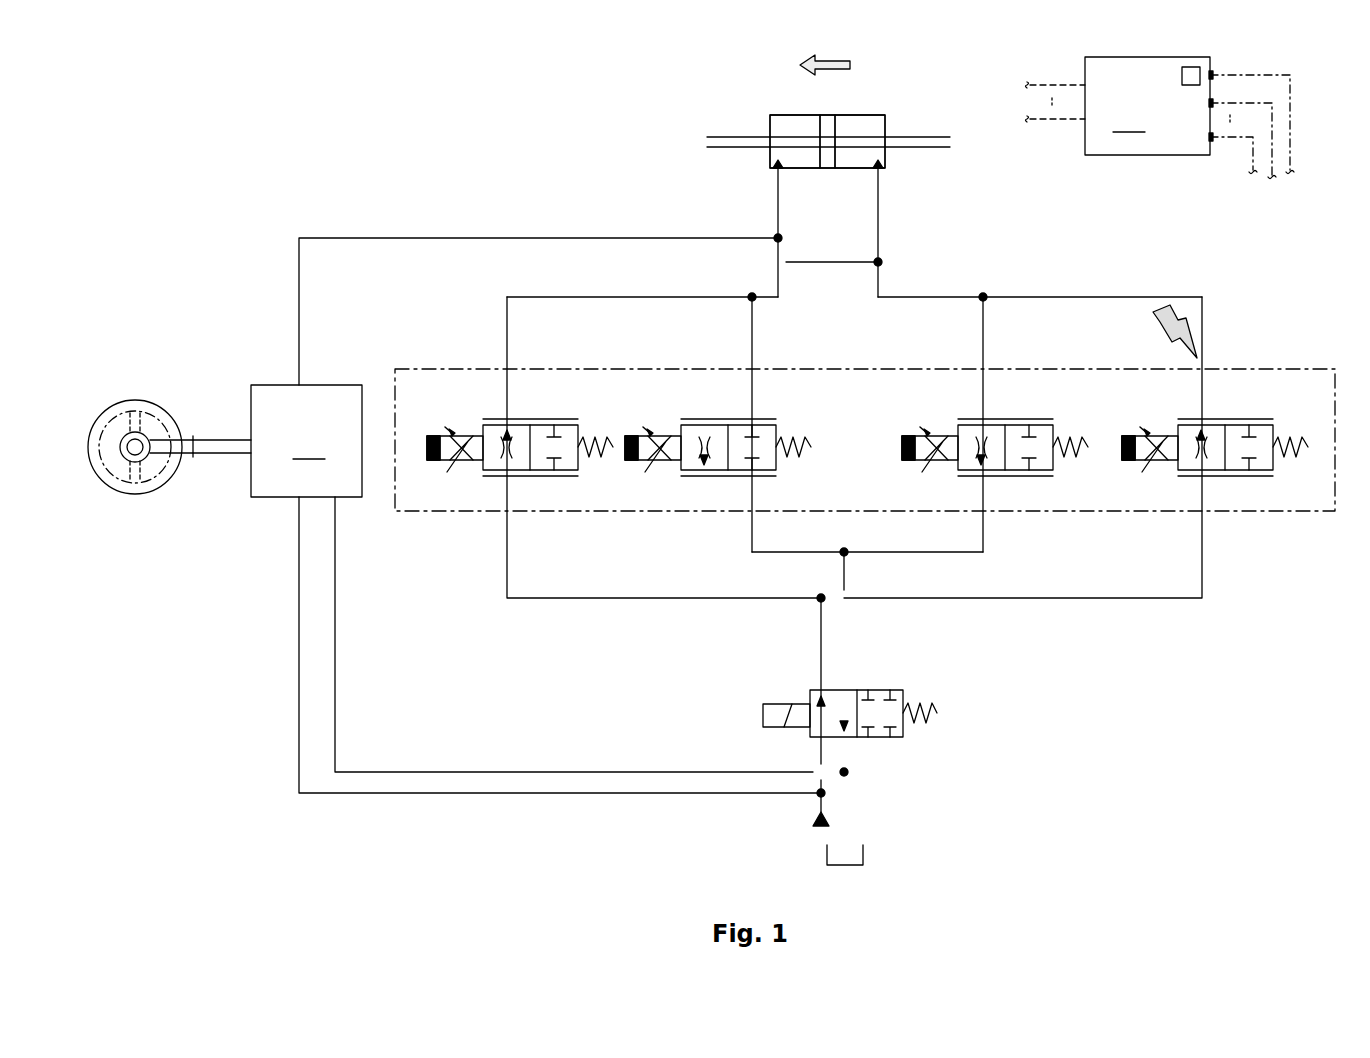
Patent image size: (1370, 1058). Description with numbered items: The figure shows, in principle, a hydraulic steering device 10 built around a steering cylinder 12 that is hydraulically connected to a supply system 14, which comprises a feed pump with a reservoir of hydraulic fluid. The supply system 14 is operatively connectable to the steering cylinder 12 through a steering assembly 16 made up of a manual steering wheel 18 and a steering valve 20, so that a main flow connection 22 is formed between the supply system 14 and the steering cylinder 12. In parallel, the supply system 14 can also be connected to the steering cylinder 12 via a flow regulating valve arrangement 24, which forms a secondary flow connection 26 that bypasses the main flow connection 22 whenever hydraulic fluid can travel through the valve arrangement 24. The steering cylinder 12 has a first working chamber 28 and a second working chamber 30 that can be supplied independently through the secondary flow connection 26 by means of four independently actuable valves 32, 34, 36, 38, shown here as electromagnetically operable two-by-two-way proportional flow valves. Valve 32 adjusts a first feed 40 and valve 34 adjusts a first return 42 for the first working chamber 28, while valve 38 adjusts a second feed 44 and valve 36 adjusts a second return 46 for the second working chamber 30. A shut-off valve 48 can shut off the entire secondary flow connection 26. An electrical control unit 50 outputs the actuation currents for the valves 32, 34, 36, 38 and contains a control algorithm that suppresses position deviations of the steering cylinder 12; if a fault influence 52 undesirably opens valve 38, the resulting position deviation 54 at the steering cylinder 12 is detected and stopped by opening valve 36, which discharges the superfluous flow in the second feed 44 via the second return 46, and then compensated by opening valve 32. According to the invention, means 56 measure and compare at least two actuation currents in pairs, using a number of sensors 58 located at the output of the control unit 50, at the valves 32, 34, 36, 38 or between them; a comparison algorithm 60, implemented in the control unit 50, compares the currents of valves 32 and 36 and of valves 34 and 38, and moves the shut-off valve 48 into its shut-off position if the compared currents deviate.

The hydraulic steering device 10 is at (222, 150).
The steering cylinder 12 is at (748, 128).
The supply system 14 is at (800, 836).
The steering assembly 16 is at (203, 541).
The manual steering wheel 18 is at (119, 408).
The steering valve 20 is at (306, 441).
The main flow connection 22 is at (540, 232).
The flow regulating valve arrangement 24 is at (1248, 516).
The secondary flow connection 26 is at (750, 277).
The first working chamber 28 is at (802, 118).
The second working chamber 30 is at (860, 118).
The valve 32 is at (480, 412).
The valve 34 is at (672, 412).
The valve 36 is at (957, 412).
The valve 38 is at (1160, 412).
The first feed 40 is at (502, 322).
The first return 42 is at (748, 536).
The second feed 44 is at (1208, 308).
The second return 46 is at (988, 538).
The shut-off valve 48 is at (900, 748).
The electrical control unit 50 is at (1160, 118).
The fault influence 52 is at (1192, 338).
The position deviation 54 is at (832, 56).
The means for measuring and comparing actuation currents 56 is at (432, 462).
The sensors 58 is at (1128, 462).
The comparison algorithm 60 is at (1190, 90).